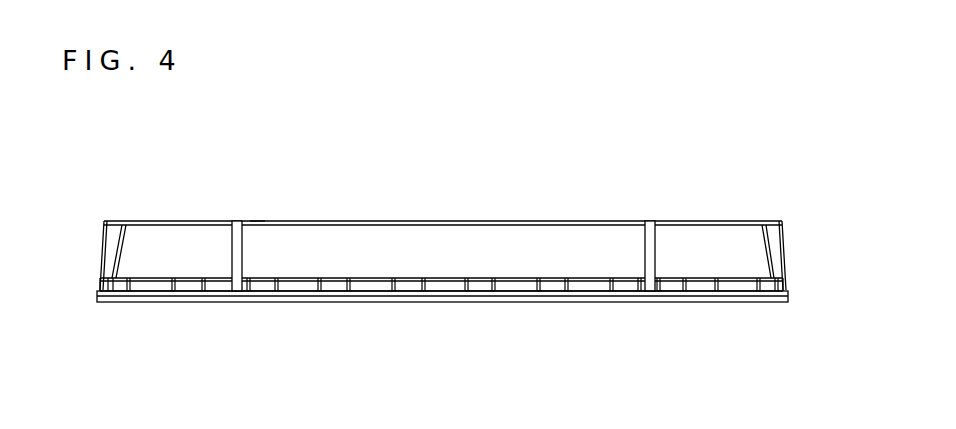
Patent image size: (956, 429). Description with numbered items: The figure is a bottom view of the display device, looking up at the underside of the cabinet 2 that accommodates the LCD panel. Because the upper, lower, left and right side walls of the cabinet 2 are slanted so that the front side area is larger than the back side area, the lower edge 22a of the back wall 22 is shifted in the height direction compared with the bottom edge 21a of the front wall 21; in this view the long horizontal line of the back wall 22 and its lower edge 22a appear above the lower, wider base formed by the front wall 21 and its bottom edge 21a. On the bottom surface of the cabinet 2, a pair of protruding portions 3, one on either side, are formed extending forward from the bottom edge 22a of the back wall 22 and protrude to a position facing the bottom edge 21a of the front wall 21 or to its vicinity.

The cabinet 2 is at (735, 221).
The back wall 22 is at (368, 221).
The lower edge of the back wall 22a is at (257, 221).
The protruding portions 3 is at (233, 255).
The front wall 21 is at (763, 302).
The bottom edge of the front wall 21a is at (241, 297).